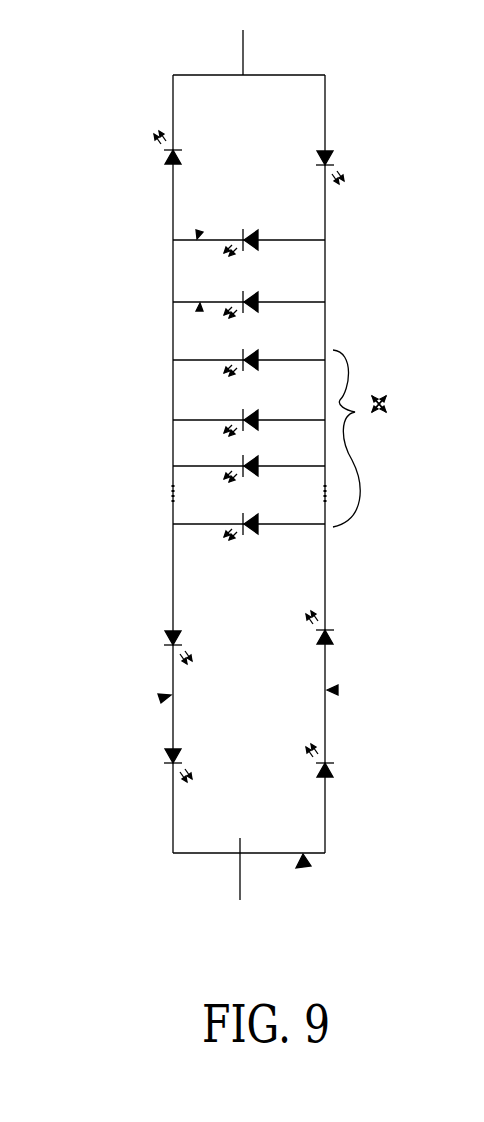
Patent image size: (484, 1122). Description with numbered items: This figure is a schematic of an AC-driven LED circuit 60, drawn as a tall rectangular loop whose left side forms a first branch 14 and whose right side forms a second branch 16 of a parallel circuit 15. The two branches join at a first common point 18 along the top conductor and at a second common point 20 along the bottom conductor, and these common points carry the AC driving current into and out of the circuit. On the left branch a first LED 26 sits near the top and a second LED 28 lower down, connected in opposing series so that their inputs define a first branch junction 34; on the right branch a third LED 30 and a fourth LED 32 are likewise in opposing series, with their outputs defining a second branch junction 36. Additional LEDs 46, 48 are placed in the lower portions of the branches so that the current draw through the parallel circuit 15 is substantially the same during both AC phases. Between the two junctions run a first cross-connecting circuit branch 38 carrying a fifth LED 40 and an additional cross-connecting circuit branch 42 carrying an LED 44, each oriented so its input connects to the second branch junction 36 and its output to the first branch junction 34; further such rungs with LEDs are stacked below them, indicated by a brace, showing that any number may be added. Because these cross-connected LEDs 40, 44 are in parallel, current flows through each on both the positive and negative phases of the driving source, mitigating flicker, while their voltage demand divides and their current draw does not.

The AC-driven circuit 60 is at (352, 70).
The first common point 18 is at (243, 77).
The second common point 20 is at (241, 840).
The first LED 26 is at (164, 160).
The third LED 30 is at (333, 158).
The second LED 28 is at (163, 645).
The fourth LED 32 is at (333, 630).
The additional LED 46 is at (165, 764).
The additional LED 48 is at (331, 767).
The first branch junction 34 is at (170, 274).
The second branch junction 36 is at (330, 262).
The first cross-connecting circuit branch 38 is at (199, 236).
The fifth LED 40 is at (249, 236).
The additional cross-connecting circuit branch 42 is at (200, 308).
The LED 44 is at (255, 309).
The first branch 14 is at (158, 698).
The second branch 16 is at (336, 690).
The parallel circuit 15 is at (306, 866).